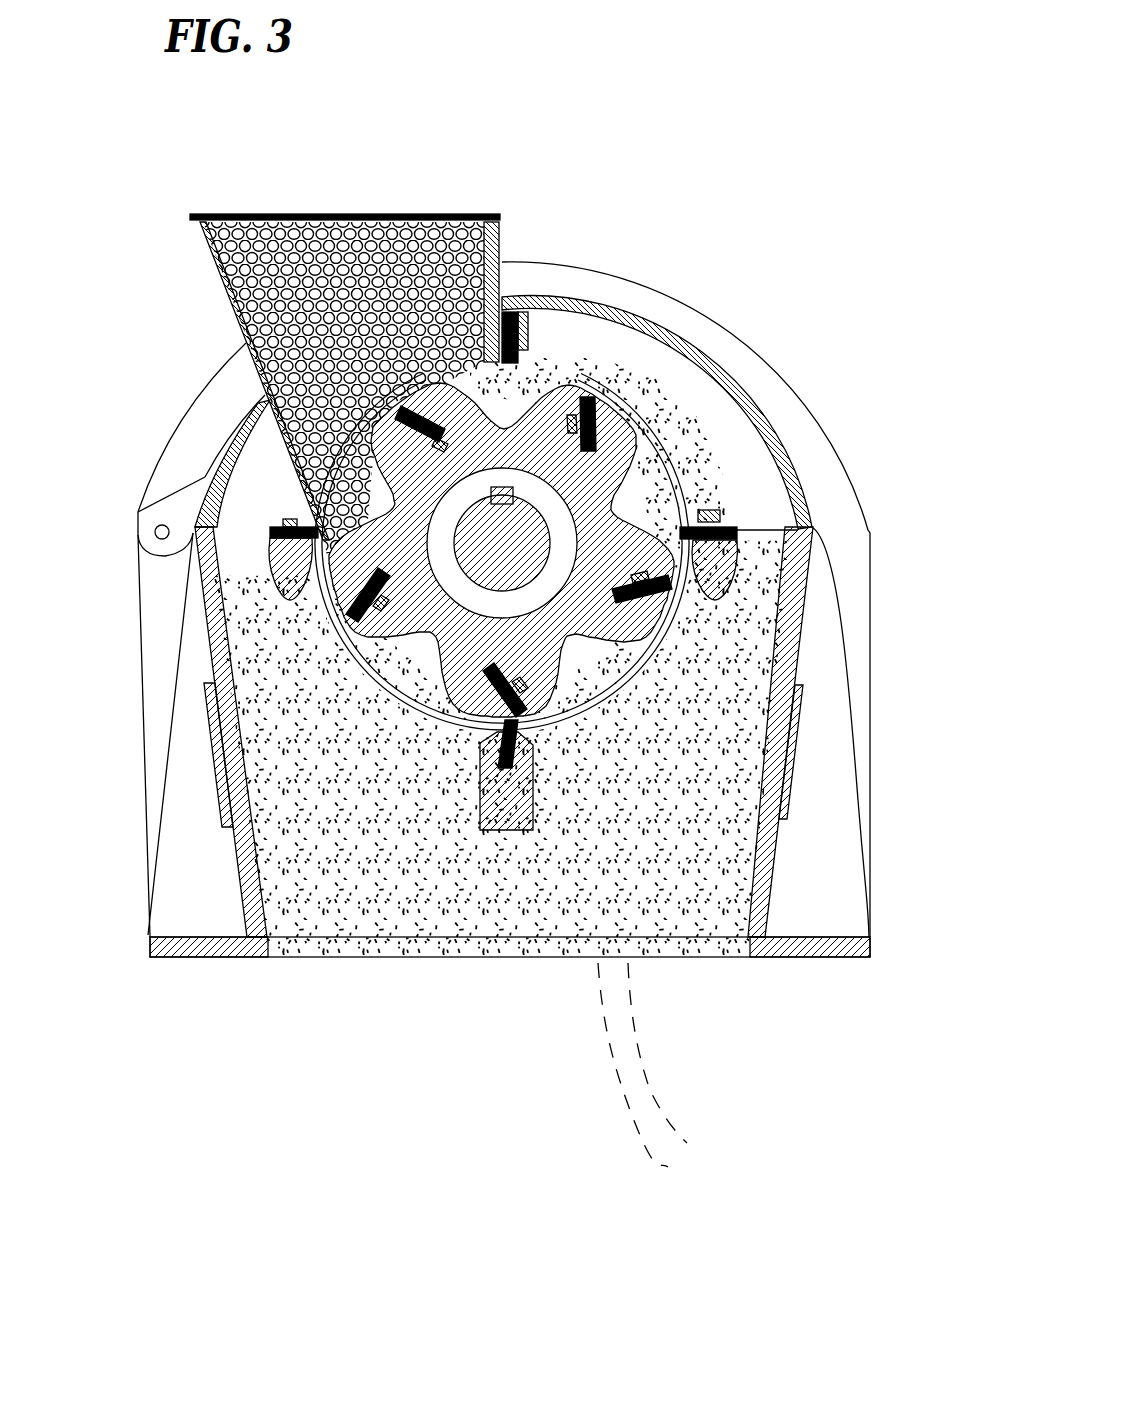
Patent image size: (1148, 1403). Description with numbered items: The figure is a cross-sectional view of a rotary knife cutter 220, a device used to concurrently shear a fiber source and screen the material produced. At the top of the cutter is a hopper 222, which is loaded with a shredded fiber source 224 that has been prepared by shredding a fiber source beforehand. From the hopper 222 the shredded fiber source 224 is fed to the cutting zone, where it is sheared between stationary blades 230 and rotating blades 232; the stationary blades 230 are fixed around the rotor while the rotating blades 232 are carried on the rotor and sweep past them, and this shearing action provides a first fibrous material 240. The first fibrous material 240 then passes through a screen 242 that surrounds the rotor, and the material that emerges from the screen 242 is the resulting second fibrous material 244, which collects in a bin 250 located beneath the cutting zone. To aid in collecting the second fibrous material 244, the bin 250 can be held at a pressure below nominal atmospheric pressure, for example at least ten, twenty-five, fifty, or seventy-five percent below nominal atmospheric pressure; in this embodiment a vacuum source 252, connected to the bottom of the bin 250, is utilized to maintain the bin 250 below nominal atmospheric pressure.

The rotary knife cutter 220 is at (515, 90).
The hopper 222 is at (500, 219).
The shredded fiber source 224 is at (240, 325).
The stationary blades 230 is at (527, 350).
The rotating blades 232 is at (596, 423).
The first fibrous material 240 is at (352, 652).
The screen 242 is at (385, 692).
The second fibrous material 244 is at (657, 882).
The bin 250 is at (763, 895).
The vacuum source 252 is at (696, 1105).